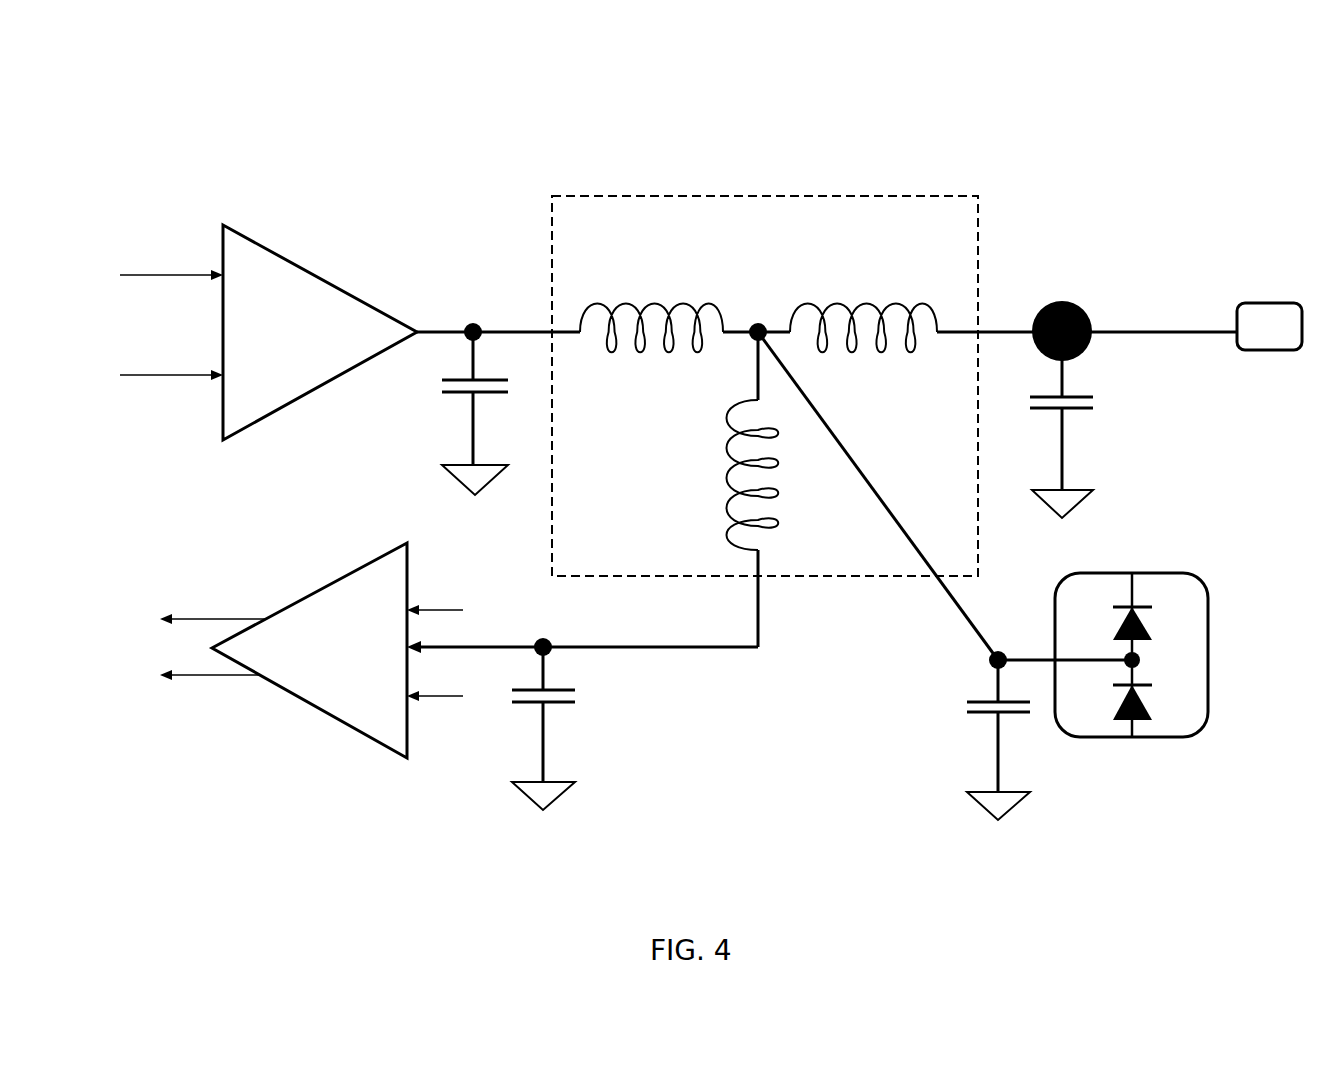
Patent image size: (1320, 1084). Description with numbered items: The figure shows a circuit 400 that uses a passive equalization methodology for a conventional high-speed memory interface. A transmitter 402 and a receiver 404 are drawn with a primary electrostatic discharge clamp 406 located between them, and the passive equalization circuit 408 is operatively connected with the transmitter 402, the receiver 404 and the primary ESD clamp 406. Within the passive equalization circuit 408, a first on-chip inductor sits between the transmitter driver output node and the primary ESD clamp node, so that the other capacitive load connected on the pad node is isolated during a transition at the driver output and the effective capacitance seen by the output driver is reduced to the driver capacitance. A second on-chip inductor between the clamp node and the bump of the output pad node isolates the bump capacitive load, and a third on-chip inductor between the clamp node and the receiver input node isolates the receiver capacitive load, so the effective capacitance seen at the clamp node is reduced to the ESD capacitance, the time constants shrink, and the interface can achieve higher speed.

The circuit 400 is at (978, 92).
The transmitter 402 is at (304, 370).
The receiver 404 is at (348, 696).
The primary electrostatic discharge (ESD) clamp 406 is at (1101, 610).
The passive equalization circuit 408 is at (617, 546).